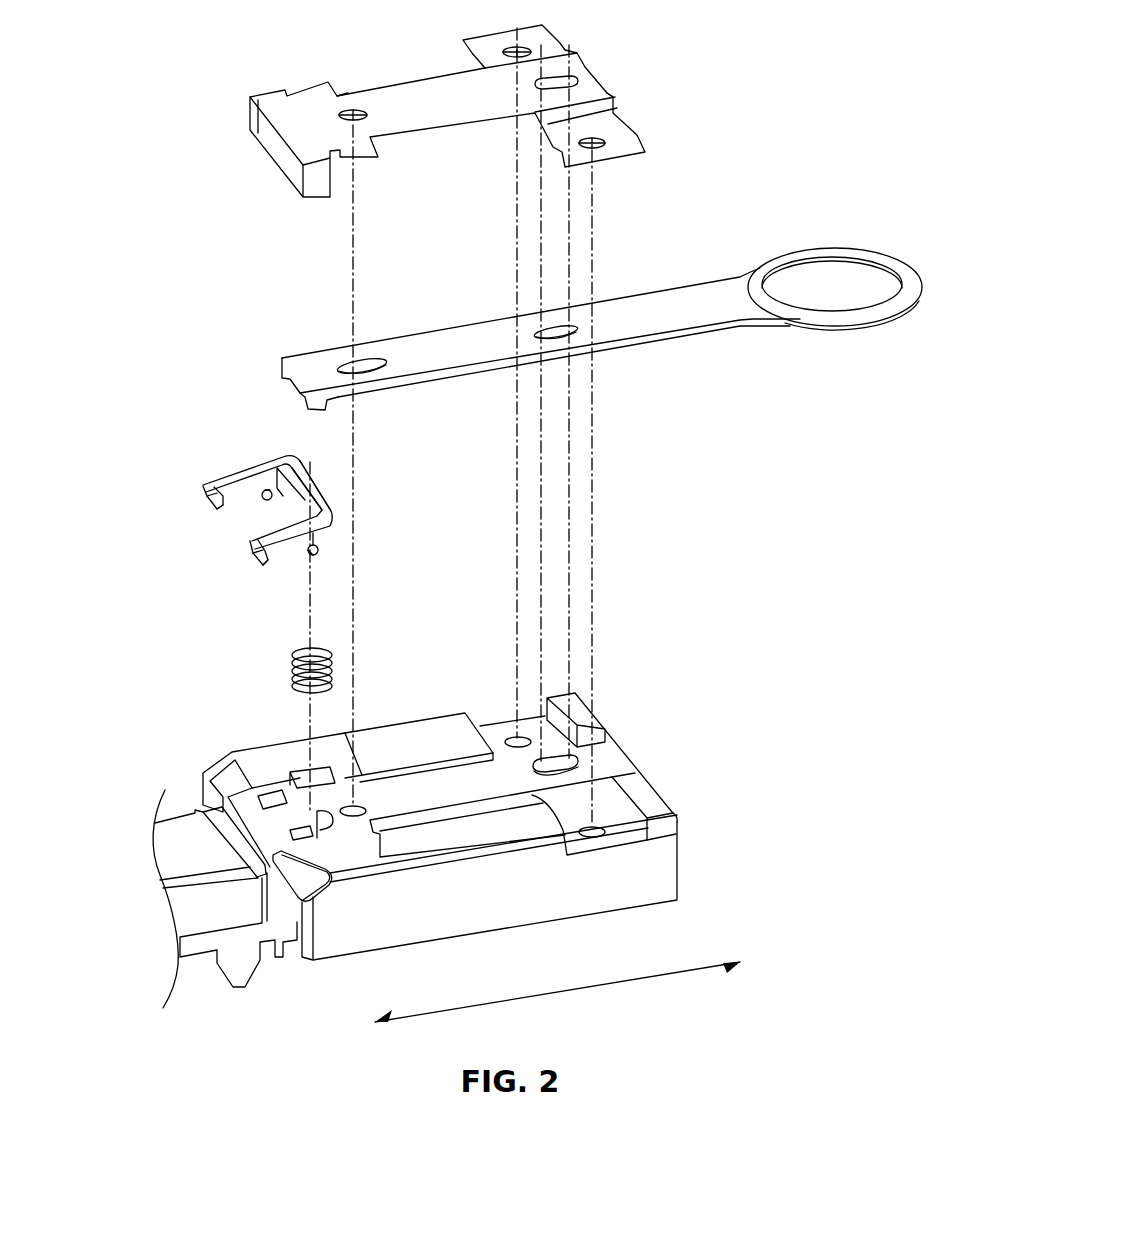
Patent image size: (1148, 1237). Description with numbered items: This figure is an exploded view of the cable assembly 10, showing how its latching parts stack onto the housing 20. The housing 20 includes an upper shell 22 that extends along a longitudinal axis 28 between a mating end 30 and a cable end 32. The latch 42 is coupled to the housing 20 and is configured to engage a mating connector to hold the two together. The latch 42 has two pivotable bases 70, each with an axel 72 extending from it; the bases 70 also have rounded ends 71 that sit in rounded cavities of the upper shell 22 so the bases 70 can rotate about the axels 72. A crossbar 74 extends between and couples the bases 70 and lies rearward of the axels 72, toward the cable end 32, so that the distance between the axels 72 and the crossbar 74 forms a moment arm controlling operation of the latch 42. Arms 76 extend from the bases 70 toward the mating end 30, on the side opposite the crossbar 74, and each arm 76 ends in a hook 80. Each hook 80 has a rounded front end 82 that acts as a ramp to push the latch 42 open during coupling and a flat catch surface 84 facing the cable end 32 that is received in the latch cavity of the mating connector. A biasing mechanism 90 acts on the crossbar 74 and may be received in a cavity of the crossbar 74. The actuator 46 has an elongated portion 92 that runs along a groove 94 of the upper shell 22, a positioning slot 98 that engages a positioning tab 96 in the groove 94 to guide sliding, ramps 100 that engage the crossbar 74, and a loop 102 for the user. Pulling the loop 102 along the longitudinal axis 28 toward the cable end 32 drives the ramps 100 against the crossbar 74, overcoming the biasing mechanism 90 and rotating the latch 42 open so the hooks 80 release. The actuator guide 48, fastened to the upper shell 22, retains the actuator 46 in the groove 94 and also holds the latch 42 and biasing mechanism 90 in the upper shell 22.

The cable assembly 10 is at (800, 42).
The housing 20 is at (680, 867).
The upper shell 22 is at (648, 800).
The longitudinal axis 28 is at (677, 980).
The mating end 30 is at (157, 793).
The cable end 32 is at (700, 705).
The latch 42 is at (240, 470).
The actuator 46 is at (702, 290).
The actuator guide 48 is at (413, 100).
The pivotable base 70 is at (300, 490).
The rounded end 71 is at (317, 553).
The axel 72 is at (275, 494).
The crossbar 74 is at (302, 465).
The arm 76 is at (212, 485).
The hook 80 is at (208, 488).
The rounded front end 82 is at (215, 503).
The flat catch surface 84 is at (318, 545).
The biasing mechanism 90 is at (290, 670).
The elongated portion 92 is at (630, 330).
The groove 94 is at (430, 785).
The positioning tab 96 is at (575, 762).
The positioning slot 98 is at (535, 333).
The ramp 100 is at (283, 367).
The loop 102 is at (803, 258).